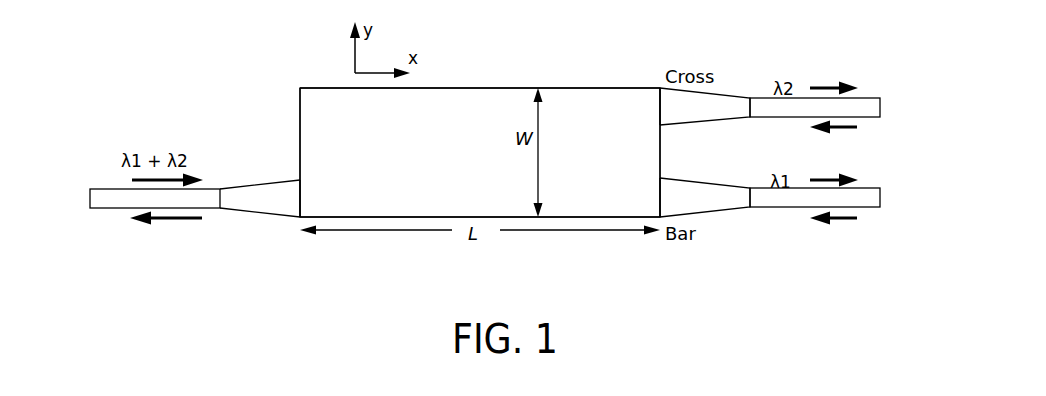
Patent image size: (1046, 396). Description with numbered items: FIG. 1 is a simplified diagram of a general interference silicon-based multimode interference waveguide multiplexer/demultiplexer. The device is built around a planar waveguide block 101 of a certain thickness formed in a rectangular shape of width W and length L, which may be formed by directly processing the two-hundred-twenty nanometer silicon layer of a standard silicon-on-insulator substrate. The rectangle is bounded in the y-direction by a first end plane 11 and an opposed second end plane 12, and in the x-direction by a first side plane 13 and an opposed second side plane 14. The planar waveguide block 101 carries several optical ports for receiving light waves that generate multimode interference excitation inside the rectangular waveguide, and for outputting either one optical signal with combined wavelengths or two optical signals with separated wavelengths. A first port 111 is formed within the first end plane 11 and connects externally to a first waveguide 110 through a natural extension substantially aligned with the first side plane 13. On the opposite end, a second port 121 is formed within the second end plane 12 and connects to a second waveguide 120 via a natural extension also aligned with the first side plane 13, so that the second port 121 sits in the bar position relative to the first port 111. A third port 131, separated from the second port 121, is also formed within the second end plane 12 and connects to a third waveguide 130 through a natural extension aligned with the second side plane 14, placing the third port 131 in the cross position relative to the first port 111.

The planar waveguide block 101 is at (483, 123).
The first end plane 11 is at (300, 133).
The second end plane 12 is at (660, 132).
The first side plane 13 is at (413, 217).
The second side plane 14 is at (520, 88).
The first waveguide 110 is at (257, 204).
The first port 111 is at (302, 204).
The second waveguide 120 is at (738, 206).
The second port 121 is at (658, 197).
The third waveguide 130 is at (725, 104).
The third port 131 is at (656, 103).